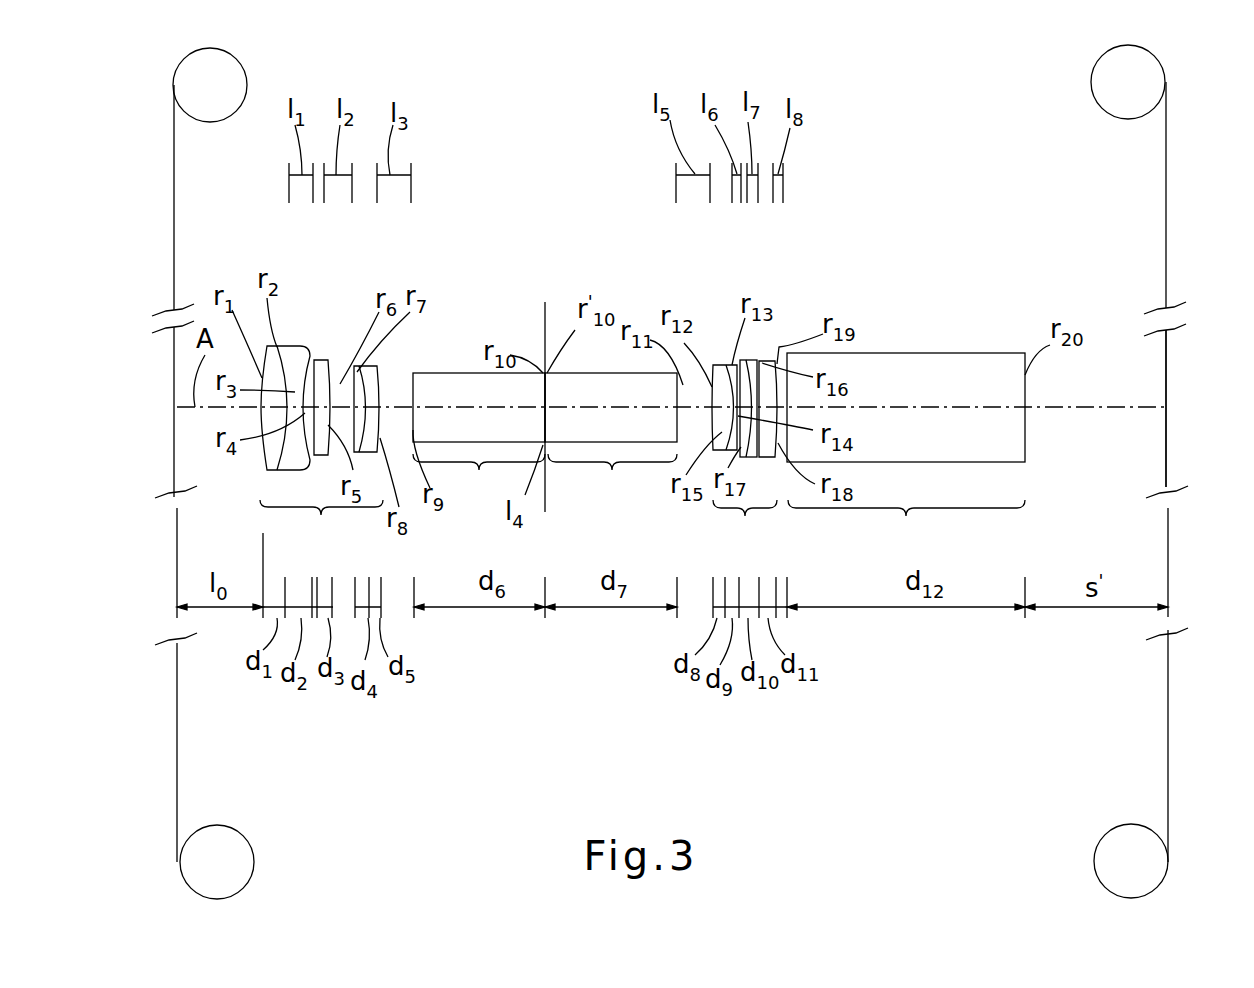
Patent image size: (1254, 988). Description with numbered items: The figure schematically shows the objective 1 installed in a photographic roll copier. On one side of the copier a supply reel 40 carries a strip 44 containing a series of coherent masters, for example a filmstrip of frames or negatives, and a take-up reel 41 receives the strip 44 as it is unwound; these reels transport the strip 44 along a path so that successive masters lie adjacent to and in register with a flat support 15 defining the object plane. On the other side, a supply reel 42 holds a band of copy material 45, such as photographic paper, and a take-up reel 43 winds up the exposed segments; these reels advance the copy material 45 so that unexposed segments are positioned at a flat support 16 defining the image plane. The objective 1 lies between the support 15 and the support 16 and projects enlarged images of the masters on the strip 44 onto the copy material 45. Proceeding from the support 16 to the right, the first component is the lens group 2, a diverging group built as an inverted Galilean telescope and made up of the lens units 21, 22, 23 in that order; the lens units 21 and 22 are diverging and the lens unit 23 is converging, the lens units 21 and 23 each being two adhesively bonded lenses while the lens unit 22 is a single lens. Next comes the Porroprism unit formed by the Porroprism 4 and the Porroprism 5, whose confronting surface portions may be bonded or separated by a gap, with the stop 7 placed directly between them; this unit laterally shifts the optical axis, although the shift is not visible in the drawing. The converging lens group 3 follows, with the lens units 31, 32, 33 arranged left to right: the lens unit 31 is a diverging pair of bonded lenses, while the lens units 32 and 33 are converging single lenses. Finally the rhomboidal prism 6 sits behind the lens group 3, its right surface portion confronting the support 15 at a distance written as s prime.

The objective 1 is at (873, 145).
The lens group 2 is at (354, 415).
The lens group 3 is at (763, 404).
The Porroprism 4 is at (479, 439).
The Porroprism 5 is at (611, 439).
The rhomboidal prism 6 is at (906, 453).
The stop 7 is at (543, 330).
The flat support 15 is at (1171, 357).
The flat support 16 is at (176, 372).
The lens unit 21 is at (287, 347).
The lens unit 22 is at (324, 360).
The lens unit 23 is at (370, 368).
The lens unit 31 is at (719, 365).
The lens unit 32 is at (747, 359).
The lens unit 33 is at (763, 361).
The supply reel 40 is at (1093, 60).
The take-up reel 41 is at (1127, 825).
The supply reel 42 is at (235, 55).
The take-up reel 43 is at (245, 834).
The strip 44 is at (1167, 228).
The copy material 45 is at (174, 215).